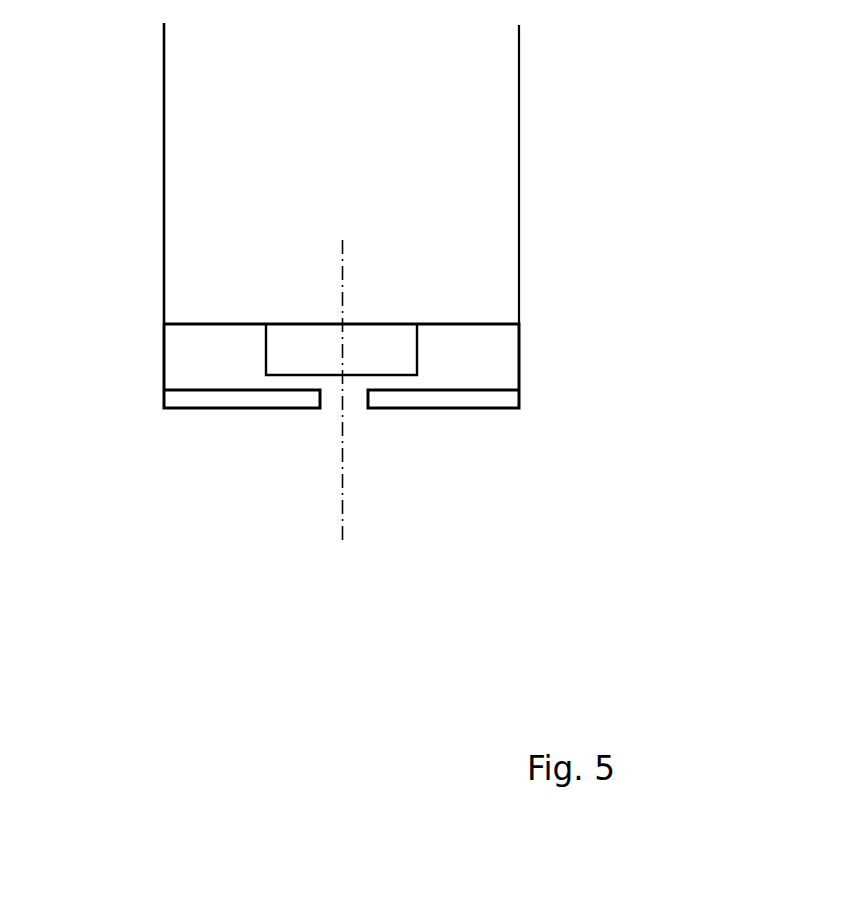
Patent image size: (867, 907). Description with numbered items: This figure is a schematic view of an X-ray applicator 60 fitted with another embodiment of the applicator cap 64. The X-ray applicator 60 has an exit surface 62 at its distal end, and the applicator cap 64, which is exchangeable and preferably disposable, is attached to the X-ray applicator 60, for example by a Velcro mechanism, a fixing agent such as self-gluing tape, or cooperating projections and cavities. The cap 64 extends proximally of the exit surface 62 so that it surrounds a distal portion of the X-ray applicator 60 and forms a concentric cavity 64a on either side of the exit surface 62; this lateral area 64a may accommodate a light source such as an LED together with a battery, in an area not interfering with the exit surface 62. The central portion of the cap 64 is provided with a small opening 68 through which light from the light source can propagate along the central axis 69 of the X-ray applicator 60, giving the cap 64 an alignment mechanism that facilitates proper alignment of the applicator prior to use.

The X-ray applicator 60 is at (521, 136).
The exit surface 62 is at (297, 377).
The applicator cap 64 is at (163, 377).
The concentric cavity 64a is at (182, 340).
The small opening 68 is at (332, 409).
The central axis 69 is at (344, 513).